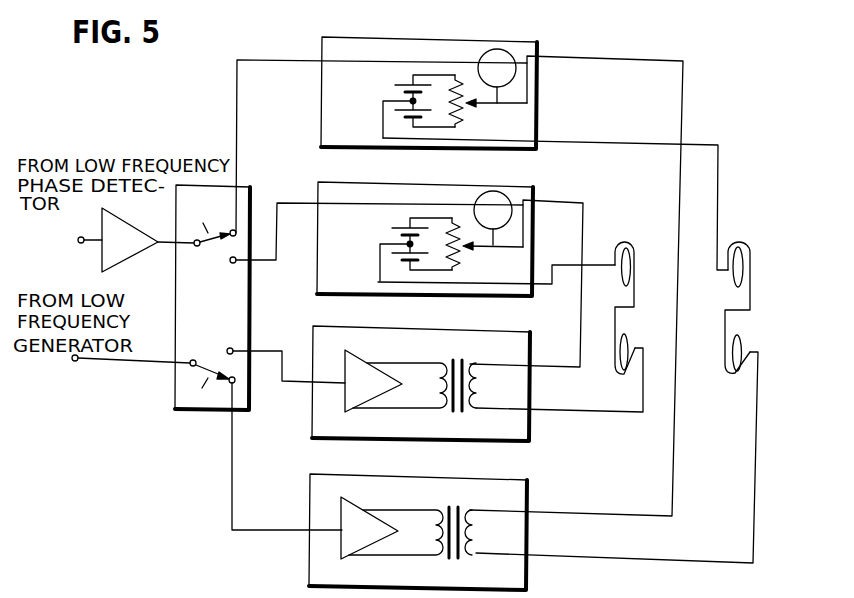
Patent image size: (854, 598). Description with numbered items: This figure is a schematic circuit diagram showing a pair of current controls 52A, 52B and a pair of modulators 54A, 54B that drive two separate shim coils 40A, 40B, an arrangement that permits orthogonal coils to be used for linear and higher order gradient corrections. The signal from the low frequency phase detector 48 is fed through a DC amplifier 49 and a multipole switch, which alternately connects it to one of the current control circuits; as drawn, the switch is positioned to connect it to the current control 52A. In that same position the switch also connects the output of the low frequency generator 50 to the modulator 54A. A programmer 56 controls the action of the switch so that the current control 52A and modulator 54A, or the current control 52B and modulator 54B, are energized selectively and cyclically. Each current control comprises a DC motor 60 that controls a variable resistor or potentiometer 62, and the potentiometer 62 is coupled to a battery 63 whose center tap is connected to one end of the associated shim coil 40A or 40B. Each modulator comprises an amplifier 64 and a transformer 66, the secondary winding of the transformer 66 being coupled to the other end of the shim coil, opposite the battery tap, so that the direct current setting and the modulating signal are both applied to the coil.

The shim coil 40A is at (743, 242).
The shim coil 40B is at (627, 378).
The low frequency phase detector 48 is at (79, 237).
The DC amplifier 49 is at (145, 245).
The low frequency generator 50 is at (62, 368).
The current control 52A is at (398, 37).
The current control 52B is at (386, 182).
The modulator 54A is at (519, 478).
The modulator 54B is at (519, 332).
The programmer 56 is at (213, 412).
The DC motor 60 is at (482, 62).
The potentiometer 62 is at (469, 106).
The battery 63 is at (410, 85).
The amplifier 64 is at (360, 363).
The transformer 66 is at (461, 365).